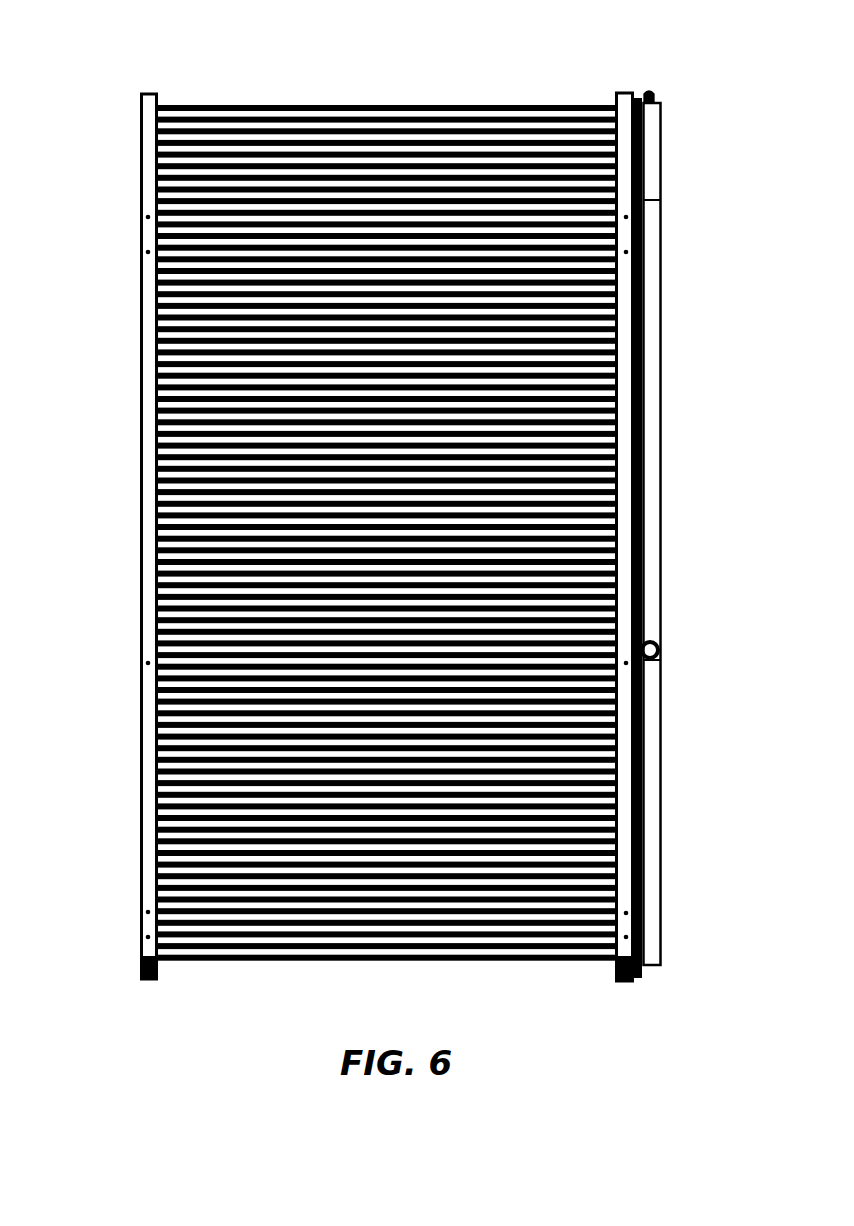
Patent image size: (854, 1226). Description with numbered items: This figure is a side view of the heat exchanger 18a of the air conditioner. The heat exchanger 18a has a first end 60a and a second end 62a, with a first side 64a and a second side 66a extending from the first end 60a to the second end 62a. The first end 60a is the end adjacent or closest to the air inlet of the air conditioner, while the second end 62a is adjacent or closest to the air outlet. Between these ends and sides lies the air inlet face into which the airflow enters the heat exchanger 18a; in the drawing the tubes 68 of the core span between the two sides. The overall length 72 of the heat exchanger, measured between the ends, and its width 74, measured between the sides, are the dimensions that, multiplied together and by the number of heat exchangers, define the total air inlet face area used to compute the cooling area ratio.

The heat exchanger 18a is at (703, 122).
The first end 60a is at (381, 104).
The second end 62a is at (456, 963).
The first side 64a is at (645, 416).
The second side 66a is at (153, 413).
The tubes 68 is at (577, 322).
The length 72 is at (127, 980).
The width 74 is at (640, 84).